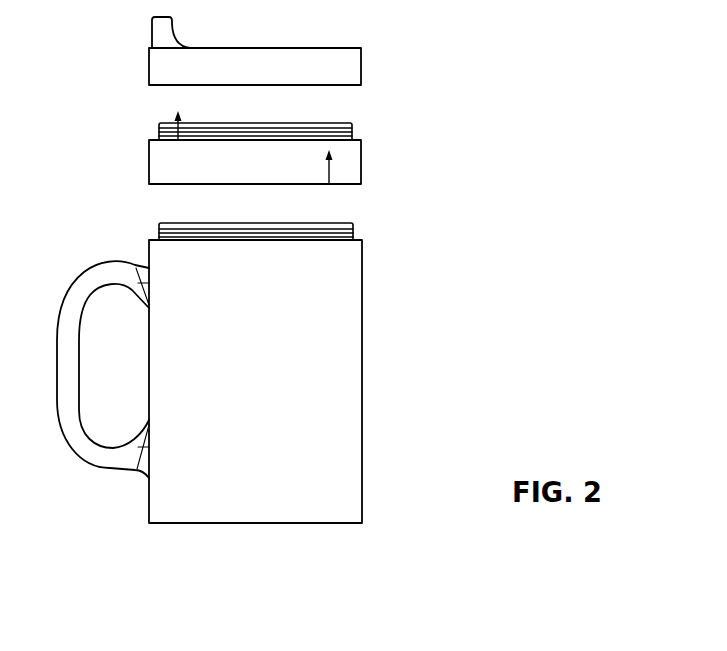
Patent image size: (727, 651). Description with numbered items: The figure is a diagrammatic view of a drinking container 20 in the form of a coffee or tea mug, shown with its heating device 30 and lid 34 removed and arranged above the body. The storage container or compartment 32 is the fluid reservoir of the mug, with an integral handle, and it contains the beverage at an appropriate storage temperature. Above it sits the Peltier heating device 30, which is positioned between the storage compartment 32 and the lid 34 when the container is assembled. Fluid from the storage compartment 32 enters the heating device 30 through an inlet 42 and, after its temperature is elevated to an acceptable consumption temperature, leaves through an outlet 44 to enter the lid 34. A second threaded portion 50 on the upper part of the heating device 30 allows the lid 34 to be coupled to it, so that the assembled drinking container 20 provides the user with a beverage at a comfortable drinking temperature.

The drinking container 20 is at (283, 359).
The heating device 30 is at (282, 155).
The storage container or compartment 32 is at (362, 418).
The lid 34 is at (361, 48).
The inlet 42 is at (329, 184).
The outlet 44 is at (165, 128).
The second threaded portion 50 is at (352, 125).